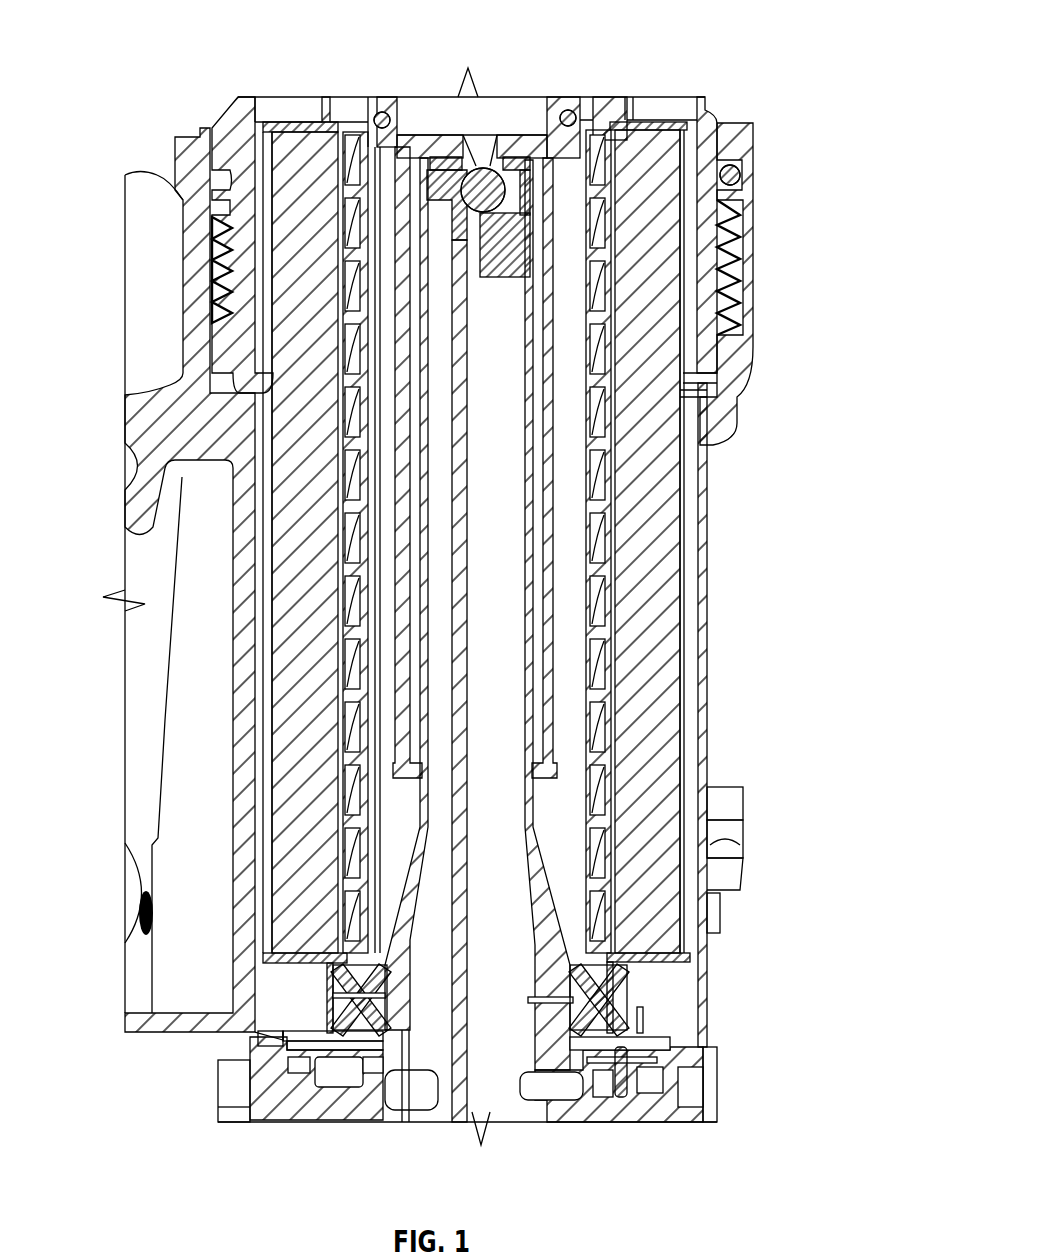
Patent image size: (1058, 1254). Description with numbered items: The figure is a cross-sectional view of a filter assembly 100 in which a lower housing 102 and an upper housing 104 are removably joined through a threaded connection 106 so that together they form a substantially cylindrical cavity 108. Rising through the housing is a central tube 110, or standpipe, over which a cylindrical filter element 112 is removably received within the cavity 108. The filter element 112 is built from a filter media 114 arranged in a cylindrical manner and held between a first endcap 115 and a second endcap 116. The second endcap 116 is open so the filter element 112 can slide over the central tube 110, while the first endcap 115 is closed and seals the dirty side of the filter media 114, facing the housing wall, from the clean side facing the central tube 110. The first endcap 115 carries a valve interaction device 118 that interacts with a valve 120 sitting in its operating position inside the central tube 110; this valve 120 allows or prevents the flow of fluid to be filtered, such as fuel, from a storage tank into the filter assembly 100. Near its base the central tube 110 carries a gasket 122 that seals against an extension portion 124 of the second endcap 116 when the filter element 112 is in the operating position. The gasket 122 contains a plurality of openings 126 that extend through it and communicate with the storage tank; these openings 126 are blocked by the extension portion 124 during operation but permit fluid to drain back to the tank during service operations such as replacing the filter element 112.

The filter assembly 100 is at (444, 595).
The lower housing 102 is at (235, 705).
The upper housing 104 is at (217, 132).
The threaded connection 106 is at (215, 270).
The cavity 108 is at (690, 155).
The central tube 110 is at (620, 630).
The filter element 112 is at (688, 551).
The filter media 114 is at (667, 490).
The first endcap 115 is at (672, 117).
The second endcap 116 is at (680, 967).
The valve interaction device 118 is at (467, 150).
The valve 120 is at (492, 172).
The gasket 122 is at (607, 1017).
The extension portion 124 is at (630, 1000).
The openings 126 is at (667, 1043).